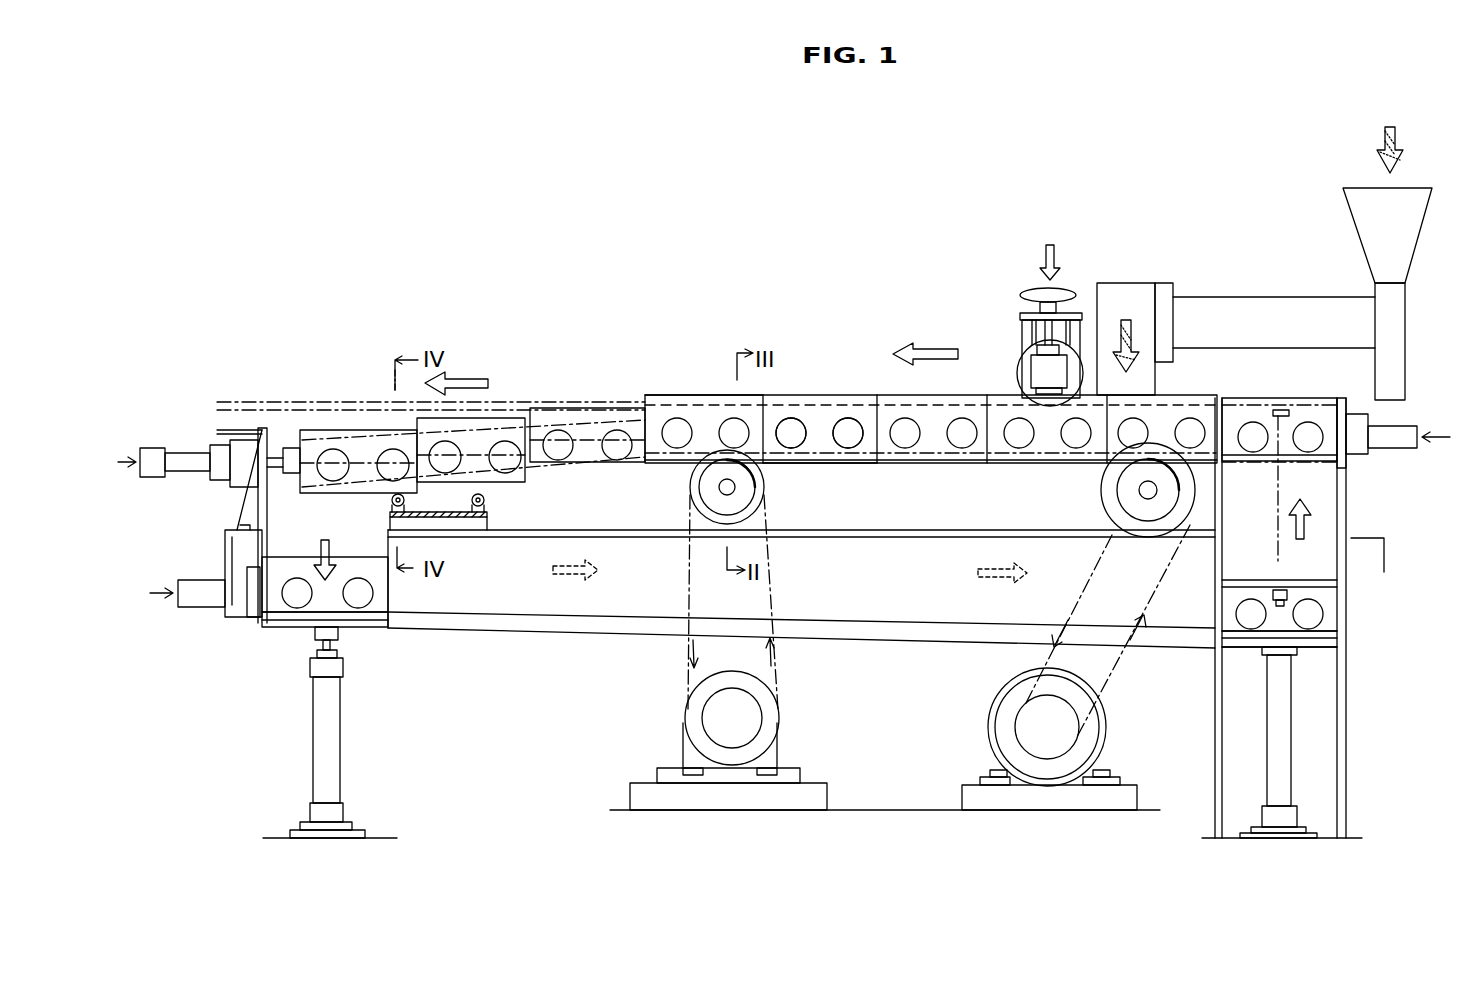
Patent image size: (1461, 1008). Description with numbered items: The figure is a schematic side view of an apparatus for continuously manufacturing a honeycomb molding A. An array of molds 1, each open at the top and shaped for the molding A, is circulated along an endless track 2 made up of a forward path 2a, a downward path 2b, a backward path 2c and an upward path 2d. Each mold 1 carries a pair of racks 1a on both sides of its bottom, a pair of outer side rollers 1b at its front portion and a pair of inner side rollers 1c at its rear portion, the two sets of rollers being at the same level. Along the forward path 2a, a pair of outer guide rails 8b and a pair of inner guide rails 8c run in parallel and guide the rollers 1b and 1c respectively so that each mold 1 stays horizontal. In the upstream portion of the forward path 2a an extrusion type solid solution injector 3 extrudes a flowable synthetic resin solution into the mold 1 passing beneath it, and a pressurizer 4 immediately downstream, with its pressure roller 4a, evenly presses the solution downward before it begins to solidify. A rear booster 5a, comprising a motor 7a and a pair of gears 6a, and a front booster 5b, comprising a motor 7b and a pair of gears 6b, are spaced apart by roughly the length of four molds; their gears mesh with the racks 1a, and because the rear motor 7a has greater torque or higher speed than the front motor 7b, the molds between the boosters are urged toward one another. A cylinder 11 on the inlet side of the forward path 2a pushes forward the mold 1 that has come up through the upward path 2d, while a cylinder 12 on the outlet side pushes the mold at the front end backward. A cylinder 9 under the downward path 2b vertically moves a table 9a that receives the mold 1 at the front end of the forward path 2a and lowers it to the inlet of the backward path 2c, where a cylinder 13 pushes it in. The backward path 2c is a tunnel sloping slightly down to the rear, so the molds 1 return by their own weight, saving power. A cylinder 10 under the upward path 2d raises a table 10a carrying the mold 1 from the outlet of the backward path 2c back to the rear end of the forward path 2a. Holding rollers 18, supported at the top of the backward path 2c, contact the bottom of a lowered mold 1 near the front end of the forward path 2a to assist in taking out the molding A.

The mold 1 is at (828, 395).
The racks 1a is at (833, 462).
The outer side rollers 1b is at (853, 420).
The inner side rollers 1c is at (786, 395).
The endless track 2 is at (712, 395).
The forward path 2a is at (677, 395).
The downward path 2b is at (287, 512).
The backward path 2c is at (525, 595).
The upward path 2d is at (1315, 503).
The extrusion type solid solution injector 3 is at (1248, 305).
The pressurizer 4 is at (1033, 290).
The pressure roller 4a is at (1017, 370).
The rear booster 5a is at (1045, 767).
The front booster 5b is at (727, 757).
The gears 6a is at (1117, 490).
The gears 6b is at (700, 490).
The motor 7a is at (1012, 710).
The motor 7b is at (768, 735).
The outer guide rails 8b is at (497, 420).
The inner guide rails 8c is at (382, 440).
The cylinder 9 is at (320, 752).
The table 9a is at (282, 628).
The cylinder 10 is at (1291, 737).
The table 10a is at (1315, 660).
The cylinder 11 is at (1412, 420).
The cylinder 12 is at (192, 450).
The cylinder 13 is at (210, 605).
The holding rollers 18 is at (450, 515).
The honeycomb molding A is at (264, 398).